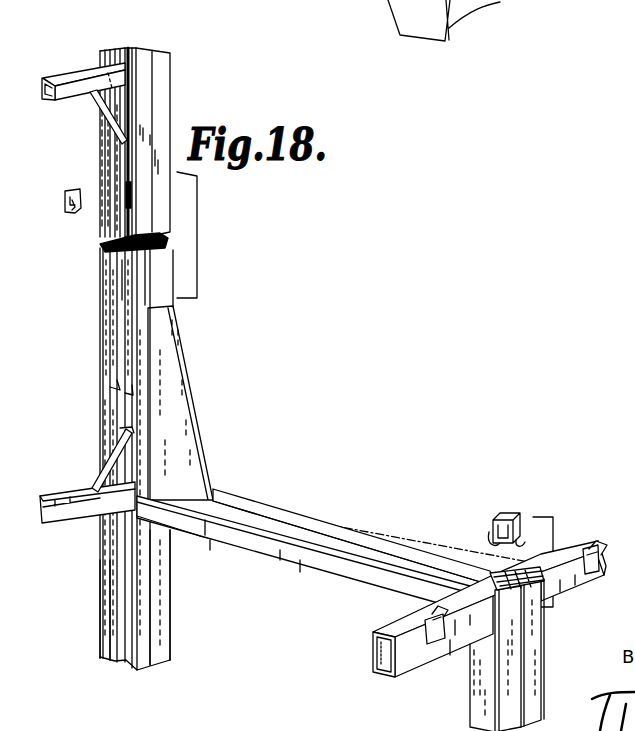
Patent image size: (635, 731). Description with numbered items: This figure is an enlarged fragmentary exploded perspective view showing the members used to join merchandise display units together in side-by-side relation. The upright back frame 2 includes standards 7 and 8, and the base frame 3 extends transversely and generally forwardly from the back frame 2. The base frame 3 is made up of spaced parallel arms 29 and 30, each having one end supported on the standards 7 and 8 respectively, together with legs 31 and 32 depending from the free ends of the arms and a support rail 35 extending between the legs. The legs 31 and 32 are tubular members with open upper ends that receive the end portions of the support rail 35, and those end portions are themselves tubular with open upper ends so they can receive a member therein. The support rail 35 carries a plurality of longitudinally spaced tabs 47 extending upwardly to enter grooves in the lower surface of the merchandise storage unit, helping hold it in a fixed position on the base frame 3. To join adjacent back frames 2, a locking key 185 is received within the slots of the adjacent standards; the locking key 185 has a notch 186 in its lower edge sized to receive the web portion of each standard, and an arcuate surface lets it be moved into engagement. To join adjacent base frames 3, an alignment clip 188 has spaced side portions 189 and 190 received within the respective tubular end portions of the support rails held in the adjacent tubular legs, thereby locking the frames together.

The back frame 2 is at (115, 48).
The base frame 3 is at (350, 525).
The standard 7 is at (165, 628).
The standard 8 is at (120, 632).
The arm 29 is at (409, 548).
The arm 30 is at (373, 583).
The leg 31 is at (540, 689).
The leg 32 is at (475, 707).
The support rail 35 is at (406, 672).
The tab 47 is at (440, 645).
The locking key 185 is at (82, 160).
The notch 186 is at (80, 214).
The alignment clip 188 is at (498, 514).
The side portion 189 is at (491, 527).
The side portion 190 is at (521, 531).